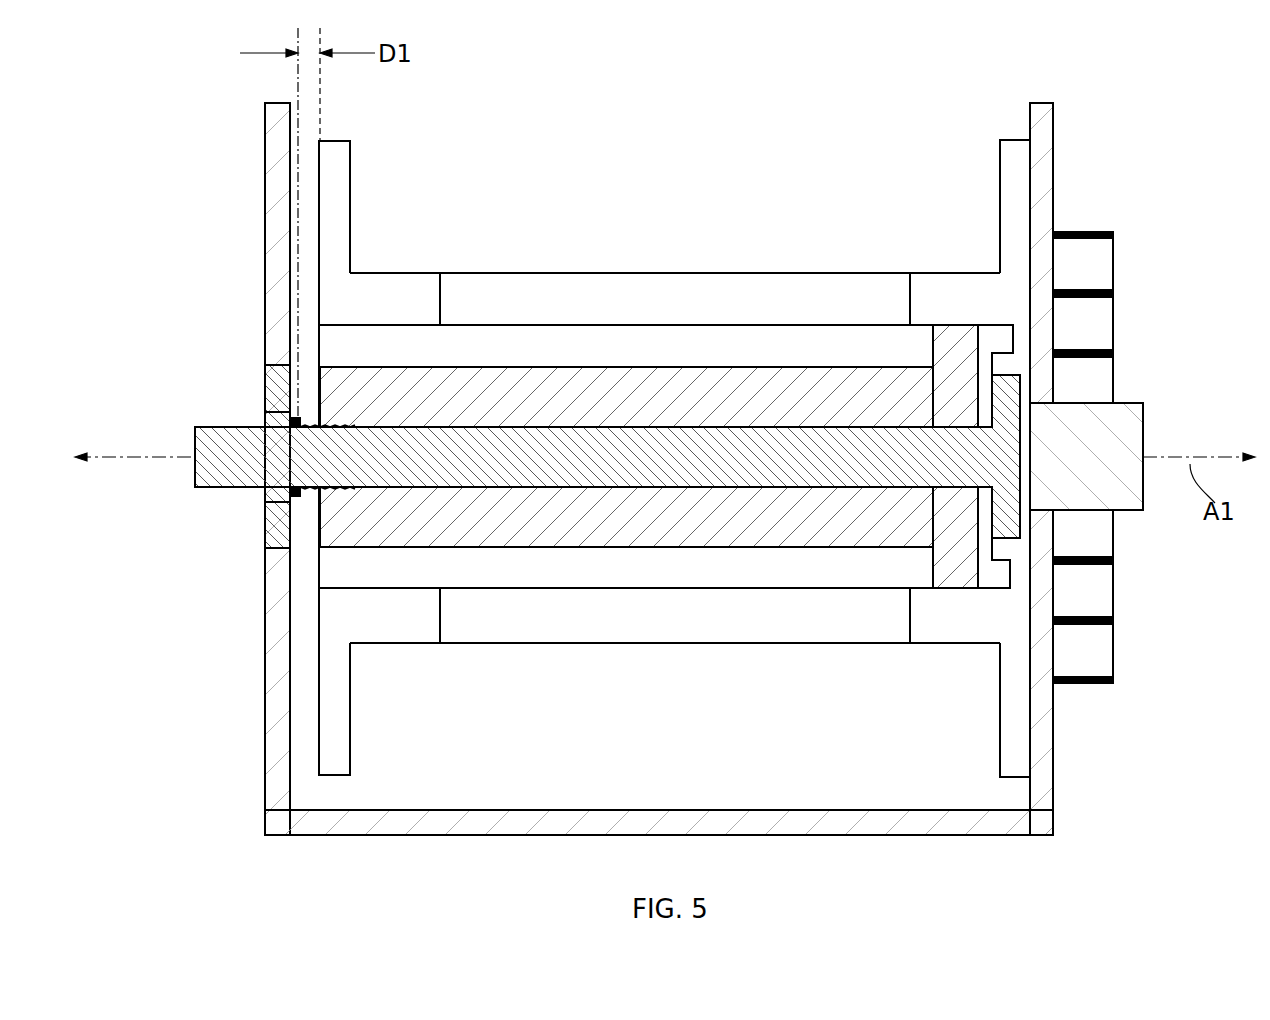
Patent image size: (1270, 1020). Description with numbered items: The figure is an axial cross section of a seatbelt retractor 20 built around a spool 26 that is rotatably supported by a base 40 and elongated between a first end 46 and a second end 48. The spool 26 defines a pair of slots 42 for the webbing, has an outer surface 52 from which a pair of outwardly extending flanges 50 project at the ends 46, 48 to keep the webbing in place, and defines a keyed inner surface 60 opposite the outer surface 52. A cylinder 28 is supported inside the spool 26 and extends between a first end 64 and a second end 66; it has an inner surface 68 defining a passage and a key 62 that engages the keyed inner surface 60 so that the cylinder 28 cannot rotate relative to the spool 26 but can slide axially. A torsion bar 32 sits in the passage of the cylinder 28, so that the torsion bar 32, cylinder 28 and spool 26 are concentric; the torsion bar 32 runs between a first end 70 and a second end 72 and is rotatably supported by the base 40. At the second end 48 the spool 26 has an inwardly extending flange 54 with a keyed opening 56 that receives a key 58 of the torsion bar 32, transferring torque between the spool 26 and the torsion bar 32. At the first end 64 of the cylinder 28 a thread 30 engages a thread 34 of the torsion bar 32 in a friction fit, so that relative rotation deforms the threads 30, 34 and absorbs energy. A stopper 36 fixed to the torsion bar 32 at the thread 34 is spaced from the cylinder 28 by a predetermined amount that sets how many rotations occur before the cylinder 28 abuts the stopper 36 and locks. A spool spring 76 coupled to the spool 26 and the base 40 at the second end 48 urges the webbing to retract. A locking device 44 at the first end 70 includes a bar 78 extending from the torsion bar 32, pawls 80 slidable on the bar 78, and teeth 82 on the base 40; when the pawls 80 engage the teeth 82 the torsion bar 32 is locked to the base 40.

The seatbelt retractor 20 is at (1222, 142).
The spool 26 is at (403, 288).
The cylinder 28 is at (742, 515).
The thread 30 is at (345, 425).
The torsion bar 32 is at (500, 470).
The thread 34 is at (294, 503).
The stopper 36 is at (291, 353).
The base 40 is at (278, 708).
The slots 42 is at (560, 288).
The locking device 44 is at (184, 334).
The first end 46 is at (356, 285).
The second end 48 is at (992, 297).
The outwardly extending flanges 50 is at (1012, 175).
The outer surface 52 is at (403, 646).
The inwardly extending flange 54 is at (1022, 348).
The keyed opening 56 is at (1005, 374).
The key 58 is at (1000, 527).
The keyed inner surface 60 is at (418, 327).
The key 62 is at (940, 345).
The first end 64 is at (294, 598).
The second end 66 is at (950, 532).
The inner surface 68 is at (616, 440).
The first end 70 is at (238, 482).
The second end 72 is at (965, 455).
The spool spring 76 is at (1090, 228).
The bar 78 is at (266, 410).
The pawls 80 is at (278, 528).
The teeth 82 is at (264, 545).